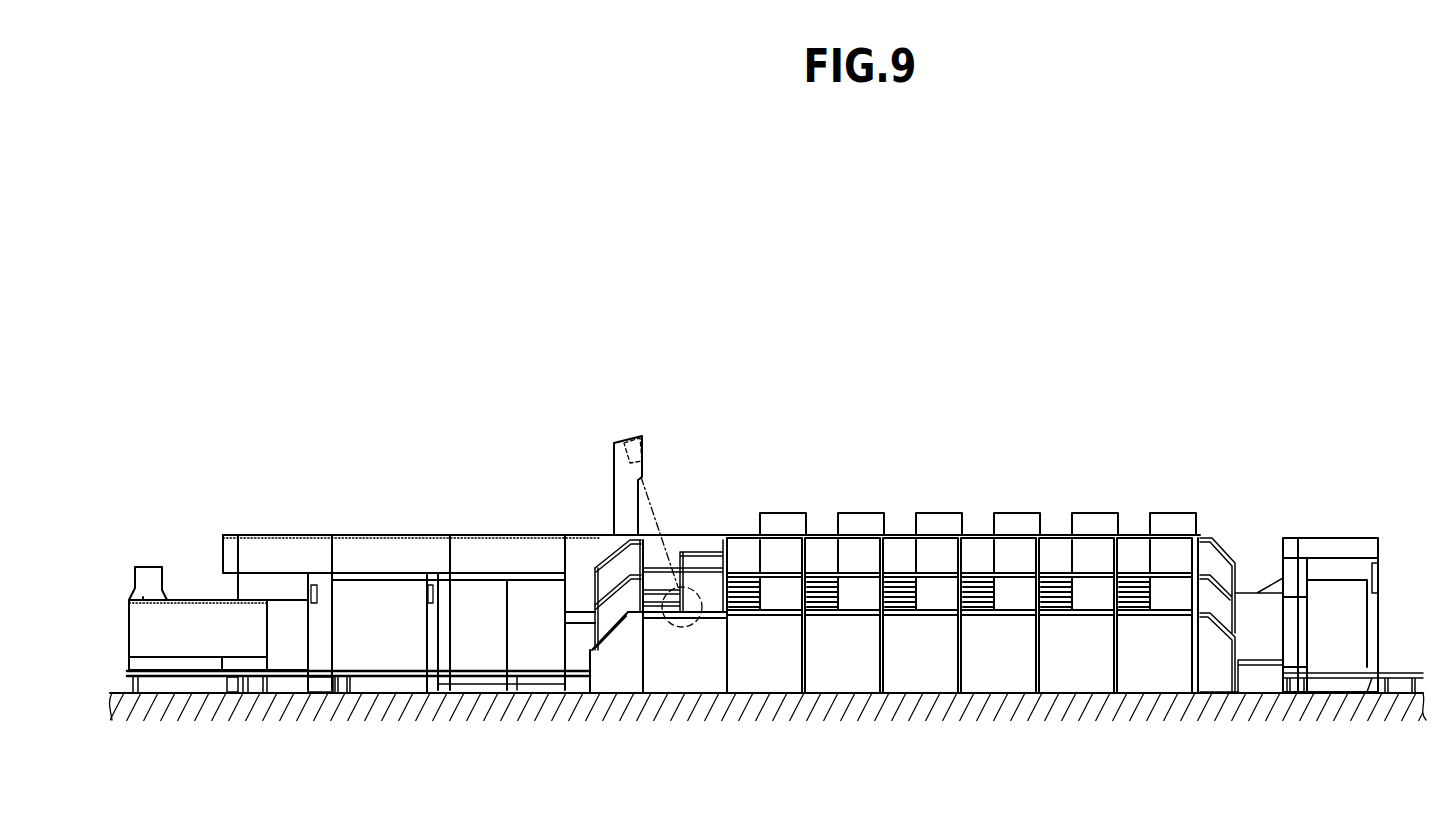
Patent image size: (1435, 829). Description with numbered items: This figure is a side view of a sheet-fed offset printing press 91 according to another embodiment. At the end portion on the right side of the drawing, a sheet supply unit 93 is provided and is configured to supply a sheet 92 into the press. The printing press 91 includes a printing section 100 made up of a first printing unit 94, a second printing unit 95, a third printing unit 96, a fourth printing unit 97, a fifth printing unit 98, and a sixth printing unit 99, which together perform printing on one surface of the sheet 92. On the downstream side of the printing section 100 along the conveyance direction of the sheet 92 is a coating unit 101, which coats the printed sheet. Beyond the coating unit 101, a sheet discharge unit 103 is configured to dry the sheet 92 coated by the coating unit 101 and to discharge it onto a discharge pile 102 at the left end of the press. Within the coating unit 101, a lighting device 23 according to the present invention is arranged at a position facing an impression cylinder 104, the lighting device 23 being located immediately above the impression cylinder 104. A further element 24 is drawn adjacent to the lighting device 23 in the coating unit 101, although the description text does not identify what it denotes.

The printing press 91 is at (1252, 312).
The sheet 92 is at (1325, 578).
The sheet supply unit 93 is at (1352, 531).
The first printing unit 94 is at (1180, 508).
The second printing unit 95 is at (1103, 508).
The third printing unit 96 is at (1025, 508).
The fourth printing unit 97 is at (948, 508).
The fifth printing unit 98 is at (871, 508).
The sixth printing unit 99 is at (794, 508).
The printing section 100 is at (912, 411).
The coating unit 101 is at (687, 513).
The discharge pile 102 is at (288, 647).
The sheet discharge unit 103 is at (390, 505).
The impression cylinder 104 is at (693, 630).
The lighting device 23 is at (692, 562).
The illumination device 24 is at (606, 456).